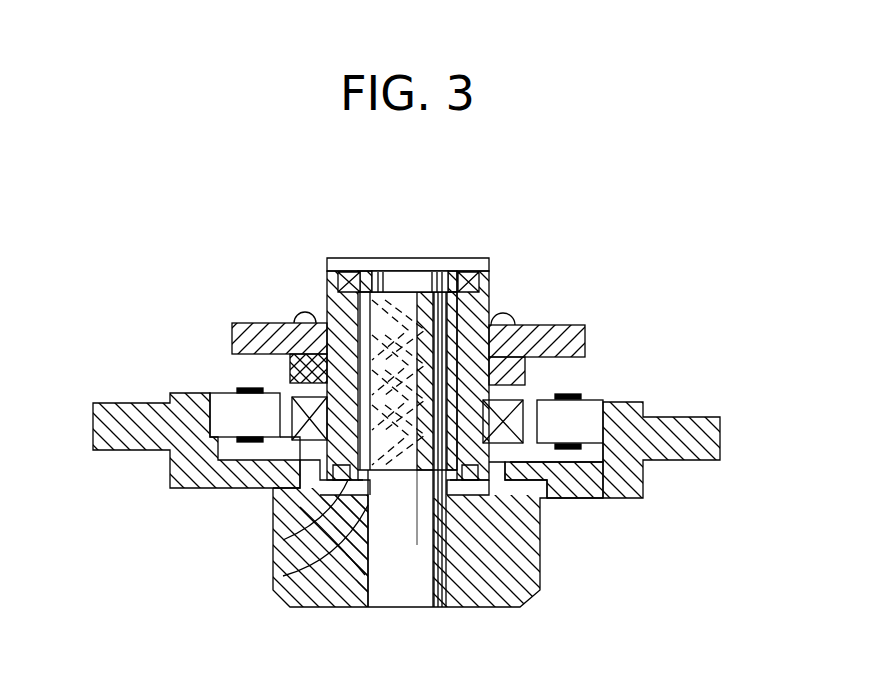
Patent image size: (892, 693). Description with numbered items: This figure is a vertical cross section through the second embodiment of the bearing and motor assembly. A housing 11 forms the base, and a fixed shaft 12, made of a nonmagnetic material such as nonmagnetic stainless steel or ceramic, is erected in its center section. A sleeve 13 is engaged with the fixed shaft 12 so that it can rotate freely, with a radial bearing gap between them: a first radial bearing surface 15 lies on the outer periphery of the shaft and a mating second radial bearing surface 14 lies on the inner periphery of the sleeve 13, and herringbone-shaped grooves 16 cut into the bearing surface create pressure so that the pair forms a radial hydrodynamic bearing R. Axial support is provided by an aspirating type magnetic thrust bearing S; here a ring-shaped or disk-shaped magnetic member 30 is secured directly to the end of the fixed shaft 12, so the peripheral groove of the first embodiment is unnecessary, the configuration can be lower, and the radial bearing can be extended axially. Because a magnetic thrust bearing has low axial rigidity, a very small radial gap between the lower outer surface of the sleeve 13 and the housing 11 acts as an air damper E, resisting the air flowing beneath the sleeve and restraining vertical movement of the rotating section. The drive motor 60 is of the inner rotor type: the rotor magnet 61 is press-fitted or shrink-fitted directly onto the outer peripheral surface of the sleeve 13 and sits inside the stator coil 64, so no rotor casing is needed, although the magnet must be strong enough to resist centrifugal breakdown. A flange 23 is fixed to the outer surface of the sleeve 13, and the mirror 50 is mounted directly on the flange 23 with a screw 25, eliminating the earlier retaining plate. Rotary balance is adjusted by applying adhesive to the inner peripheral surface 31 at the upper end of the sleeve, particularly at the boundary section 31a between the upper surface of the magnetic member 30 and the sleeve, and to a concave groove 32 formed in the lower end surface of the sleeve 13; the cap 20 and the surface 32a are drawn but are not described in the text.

The housing 11 is at (328, 598).
The fixed shaft 12 is at (410, 597).
The sleeve 13 is at (487, 304).
The second radial bearing surface 14 is at (312, 408).
The first radial bearing surface 15 is at (278, 497).
The herringbone-shaped grooves 16 is at (331, 302).
The cap 20 is at (468, 262).
The flange 23 is at (528, 371).
The screw 25 is at (300, 320).
The magnetic member 30 is at (426, 268).
The inner peripheral surface 31 is at (362, 260).
The boundary section 31a is at (340, 262).
The concave groove 32 is at (290, 568).
The spherical seat 32a is at (283, 540).
The mirror 50 is at (574, 316).
The drive motor 60 is at (602, 396).
The rotor magnet 61 is at (563, 470).
The stator coil 64 is at (613, 480).
The radial hydrodynamic bearing R is at (290, 366).
The magnetic thrust bearing S is at (396, 256).
The air damper E is at (538, 514).